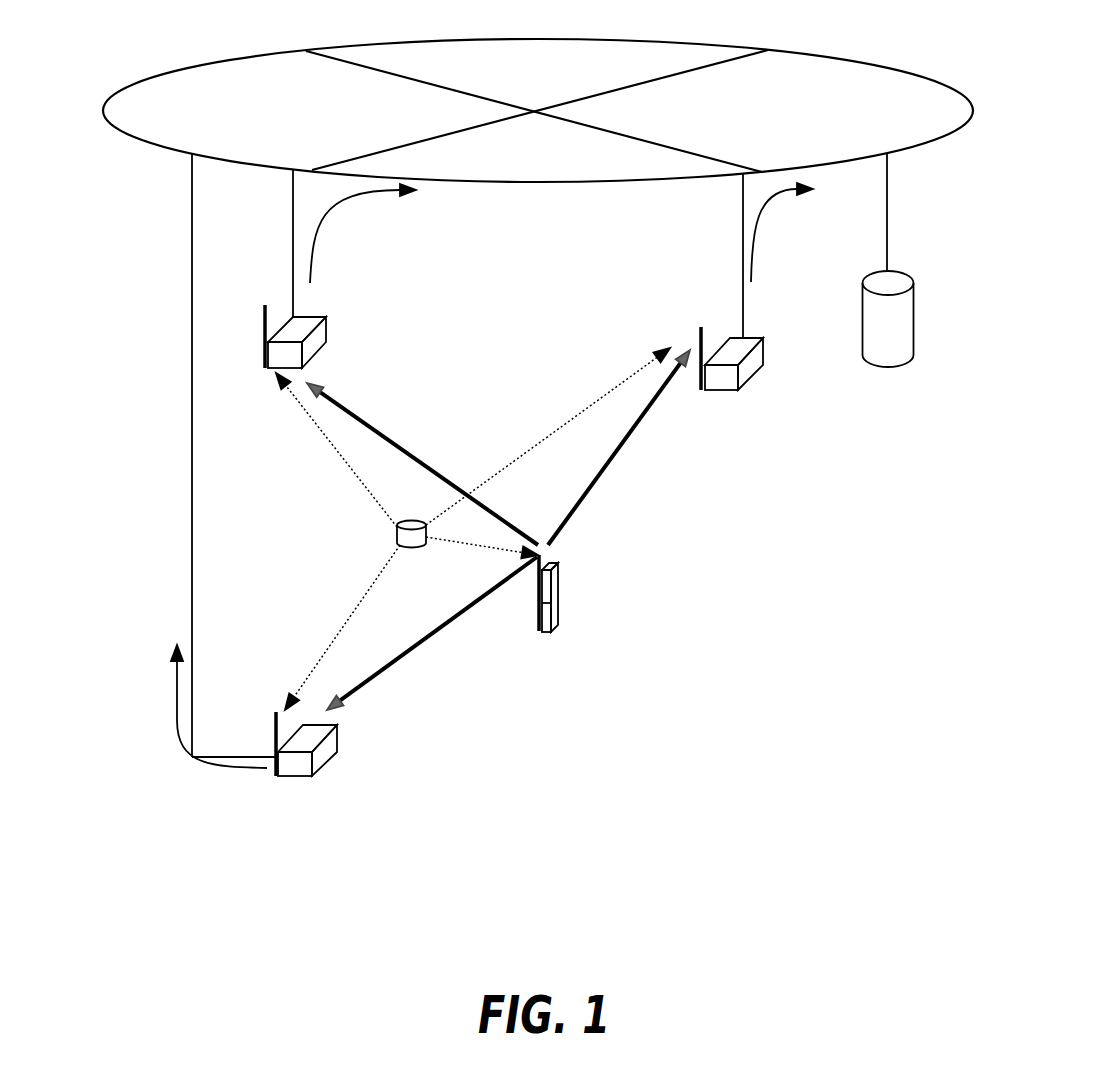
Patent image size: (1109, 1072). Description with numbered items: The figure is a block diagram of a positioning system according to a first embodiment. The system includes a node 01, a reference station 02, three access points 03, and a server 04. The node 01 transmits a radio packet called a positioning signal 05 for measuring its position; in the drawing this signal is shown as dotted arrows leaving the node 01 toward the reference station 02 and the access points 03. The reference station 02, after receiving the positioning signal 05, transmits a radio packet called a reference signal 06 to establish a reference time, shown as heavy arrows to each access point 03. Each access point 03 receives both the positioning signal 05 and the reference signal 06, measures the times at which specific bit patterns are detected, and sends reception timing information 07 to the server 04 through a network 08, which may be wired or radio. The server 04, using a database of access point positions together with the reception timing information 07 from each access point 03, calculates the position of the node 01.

The node 01 is at (360, 530).
The reference station 02 is at (600, 603).
The access point 03 is at (546, 543).
The server 04 is at (918, 346).
The positioning signal 05 is at (454, 520).
The reference signal 06 is at (499, 530).
The reception timing information 07 is at (450, 475).
The network 08 is at (538, 381).